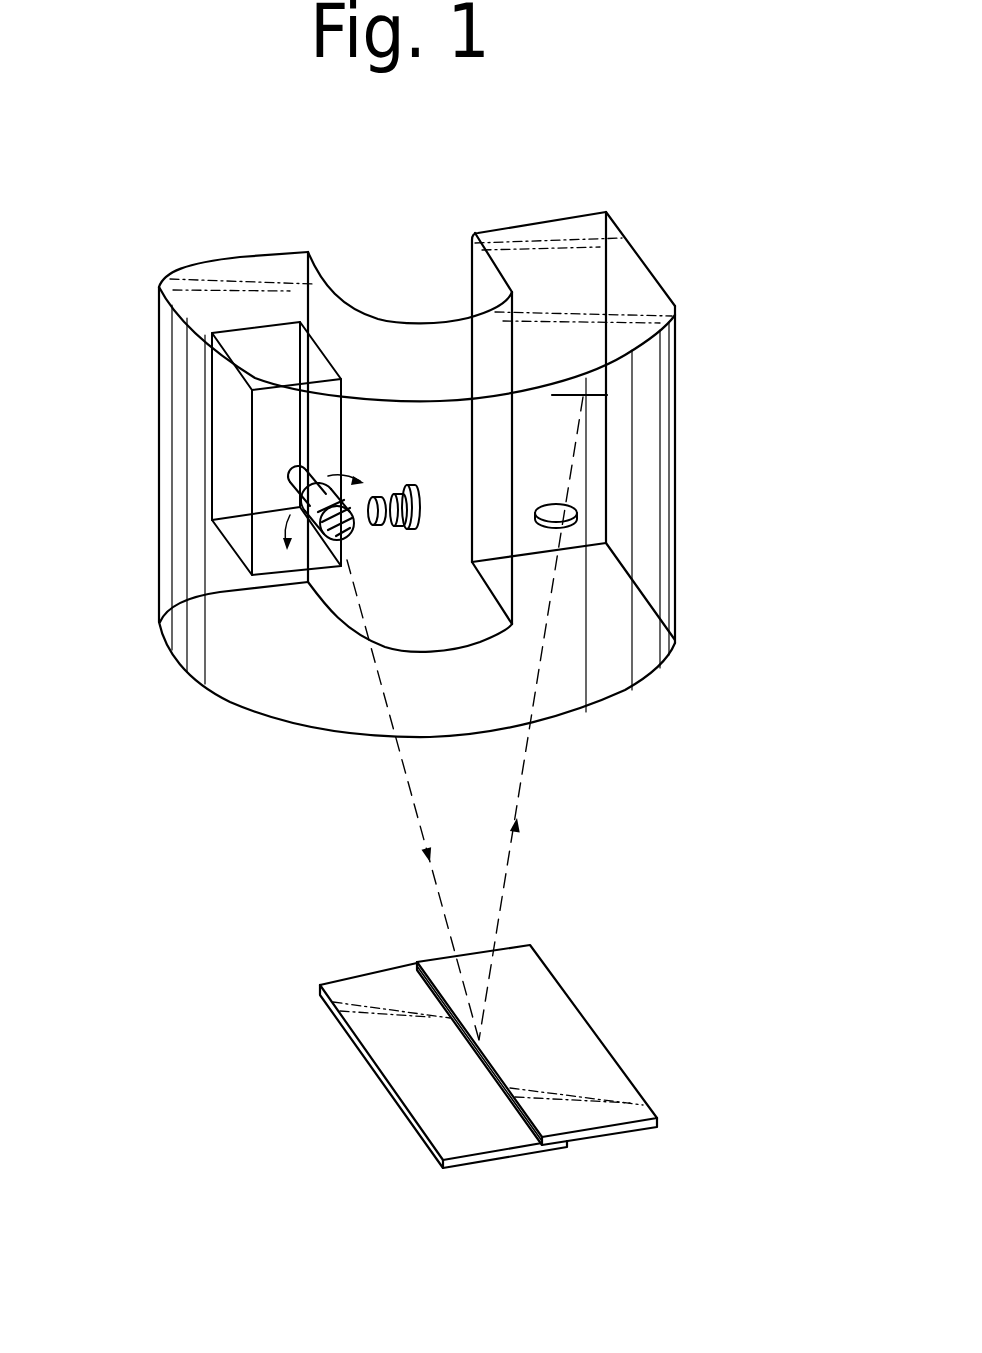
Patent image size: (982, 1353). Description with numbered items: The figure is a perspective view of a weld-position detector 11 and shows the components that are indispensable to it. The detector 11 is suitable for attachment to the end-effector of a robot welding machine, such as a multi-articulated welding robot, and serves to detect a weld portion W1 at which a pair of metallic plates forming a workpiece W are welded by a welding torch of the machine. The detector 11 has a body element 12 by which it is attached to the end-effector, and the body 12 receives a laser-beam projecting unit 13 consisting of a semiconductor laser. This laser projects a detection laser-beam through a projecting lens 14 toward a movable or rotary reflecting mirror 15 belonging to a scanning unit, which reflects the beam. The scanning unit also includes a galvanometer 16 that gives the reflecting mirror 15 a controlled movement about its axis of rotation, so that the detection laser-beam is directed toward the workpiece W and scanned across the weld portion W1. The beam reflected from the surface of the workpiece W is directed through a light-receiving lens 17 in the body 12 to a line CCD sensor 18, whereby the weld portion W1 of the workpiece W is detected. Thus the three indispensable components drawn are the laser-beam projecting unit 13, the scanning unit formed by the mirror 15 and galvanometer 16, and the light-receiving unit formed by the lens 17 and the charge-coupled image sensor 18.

The weld-position detector 11 is at (670, 238).
The body element 12 is at (662, 552).
The laser-beam projecting unit 13 is at (412, 484).
The projecting lens 14 is at (373, 496).
The rotary reflecting mirror 15 is at (332, 553).
The galvanometer 16 is at (223, 453).
The light-receiving lens 17 is at (565, 533).
The line CCD sensor 18 is at (590, 400).
The workpiece W is at (608, 1065).
The weld portion W1 is at (483, 1070).